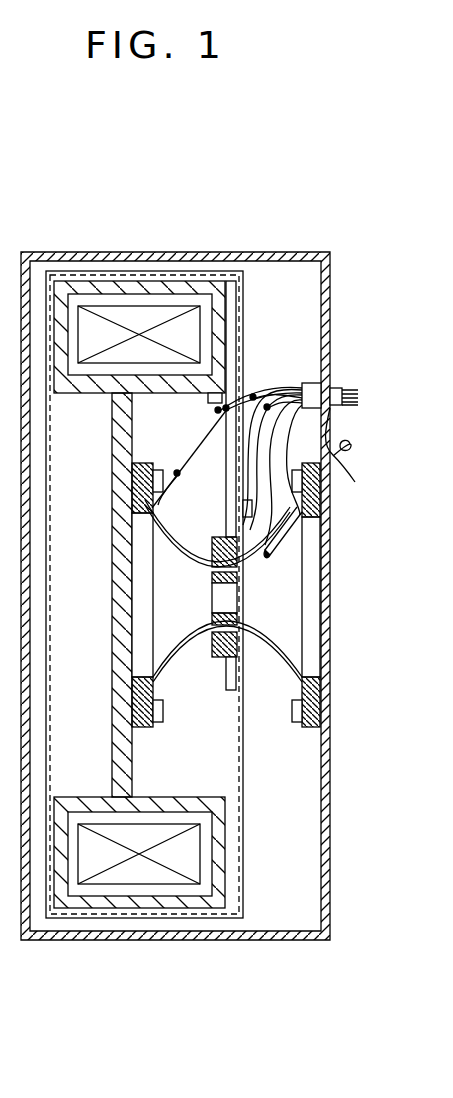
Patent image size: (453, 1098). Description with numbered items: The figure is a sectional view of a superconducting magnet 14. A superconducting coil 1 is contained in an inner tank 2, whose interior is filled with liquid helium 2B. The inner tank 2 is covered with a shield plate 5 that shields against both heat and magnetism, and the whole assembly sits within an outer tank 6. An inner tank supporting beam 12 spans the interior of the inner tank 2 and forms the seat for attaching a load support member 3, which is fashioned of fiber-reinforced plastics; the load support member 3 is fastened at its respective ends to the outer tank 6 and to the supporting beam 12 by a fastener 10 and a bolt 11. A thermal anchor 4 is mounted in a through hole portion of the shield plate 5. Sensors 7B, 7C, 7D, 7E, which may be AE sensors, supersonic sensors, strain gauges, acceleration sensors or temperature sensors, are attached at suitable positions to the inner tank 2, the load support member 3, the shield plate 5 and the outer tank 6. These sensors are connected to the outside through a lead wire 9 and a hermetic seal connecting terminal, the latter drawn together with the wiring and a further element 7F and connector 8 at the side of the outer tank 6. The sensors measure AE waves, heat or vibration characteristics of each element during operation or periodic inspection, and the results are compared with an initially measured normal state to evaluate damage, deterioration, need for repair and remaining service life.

The superconducting coil 1 is at (117, 310).
The inner tank 2 is at (232, 300).
The liquid helium 2B is at (188, 300).
The load support member 3 is at (292, 640).
The thermal anchor 4 is at (214, 660).
The shield plate 5 is at (245, 348).
The outer tank 6 is at (333, 280).
The sensor 7B is at (305, 540).
The sensor 7C is at (250, 548).
The sensor 7D is at (183, 548).
The sensor 7E is at (208, 400).
The wire loop 7F is at (346, 458).
The connector 8 is at (335, 386).
The lead wire 9 is at (333, 456).
The fastener 10 is at (150, 727).
The bolt 11 is at (160, 720).
The inner tank supporting beam 12 is at (118, 640).
The superconducting magnet 14 is at (385, 712).